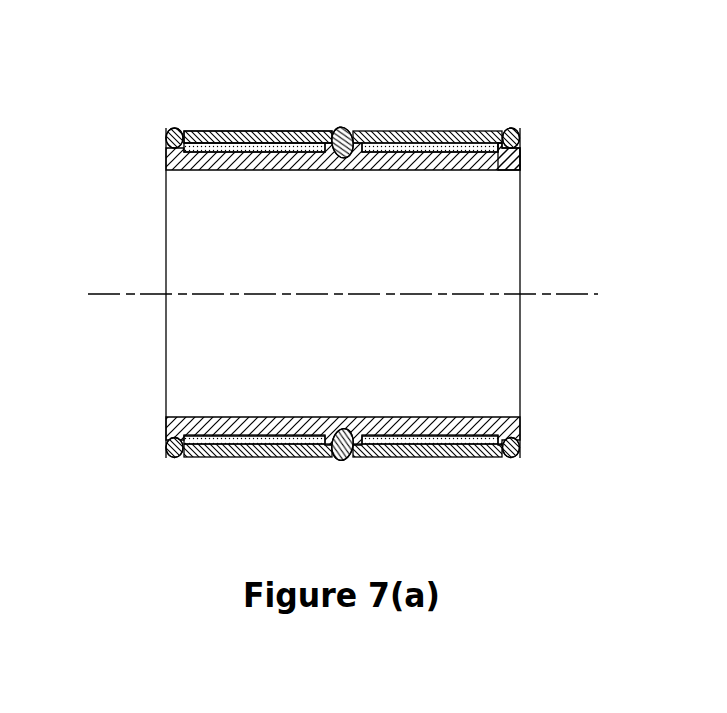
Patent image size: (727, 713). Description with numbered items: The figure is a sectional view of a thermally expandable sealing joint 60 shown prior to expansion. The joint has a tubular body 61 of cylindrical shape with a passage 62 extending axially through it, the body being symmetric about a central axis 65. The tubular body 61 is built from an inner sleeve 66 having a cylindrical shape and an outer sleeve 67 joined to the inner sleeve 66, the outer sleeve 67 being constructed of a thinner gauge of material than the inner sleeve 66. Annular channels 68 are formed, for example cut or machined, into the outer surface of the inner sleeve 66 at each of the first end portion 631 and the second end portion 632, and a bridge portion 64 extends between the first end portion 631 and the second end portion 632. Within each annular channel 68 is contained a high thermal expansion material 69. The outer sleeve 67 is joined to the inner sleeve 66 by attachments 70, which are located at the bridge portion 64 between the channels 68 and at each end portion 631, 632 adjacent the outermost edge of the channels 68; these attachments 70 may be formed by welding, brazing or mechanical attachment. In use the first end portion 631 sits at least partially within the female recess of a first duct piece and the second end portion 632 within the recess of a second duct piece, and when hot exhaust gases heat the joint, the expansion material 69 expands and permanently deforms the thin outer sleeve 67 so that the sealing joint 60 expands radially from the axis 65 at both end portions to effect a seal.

The thermally expandable sealing joint 60 is at (324, 277).
The tubular body 61 is at (521, 247).
The passage 62 is at (383, 361).
The first end portion 631 is at (258, 131).
The second end portion 632 is at (427, 131).
The bridge portion 64 is at (304, 133).
The axis 65 is at (556, 297).
The inner sleeve 66 is at (465, 172).
The outer sleeve 67 is at (470, 130).
The annular channels 68 is at (383, 132).
The high thermal expansion material 69 is at (210, 143).
The attachments 70 is at (505, 462).